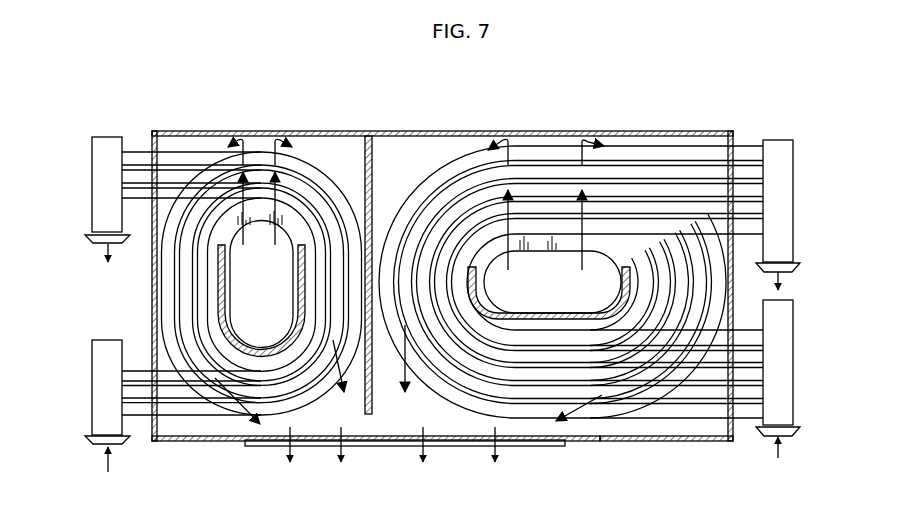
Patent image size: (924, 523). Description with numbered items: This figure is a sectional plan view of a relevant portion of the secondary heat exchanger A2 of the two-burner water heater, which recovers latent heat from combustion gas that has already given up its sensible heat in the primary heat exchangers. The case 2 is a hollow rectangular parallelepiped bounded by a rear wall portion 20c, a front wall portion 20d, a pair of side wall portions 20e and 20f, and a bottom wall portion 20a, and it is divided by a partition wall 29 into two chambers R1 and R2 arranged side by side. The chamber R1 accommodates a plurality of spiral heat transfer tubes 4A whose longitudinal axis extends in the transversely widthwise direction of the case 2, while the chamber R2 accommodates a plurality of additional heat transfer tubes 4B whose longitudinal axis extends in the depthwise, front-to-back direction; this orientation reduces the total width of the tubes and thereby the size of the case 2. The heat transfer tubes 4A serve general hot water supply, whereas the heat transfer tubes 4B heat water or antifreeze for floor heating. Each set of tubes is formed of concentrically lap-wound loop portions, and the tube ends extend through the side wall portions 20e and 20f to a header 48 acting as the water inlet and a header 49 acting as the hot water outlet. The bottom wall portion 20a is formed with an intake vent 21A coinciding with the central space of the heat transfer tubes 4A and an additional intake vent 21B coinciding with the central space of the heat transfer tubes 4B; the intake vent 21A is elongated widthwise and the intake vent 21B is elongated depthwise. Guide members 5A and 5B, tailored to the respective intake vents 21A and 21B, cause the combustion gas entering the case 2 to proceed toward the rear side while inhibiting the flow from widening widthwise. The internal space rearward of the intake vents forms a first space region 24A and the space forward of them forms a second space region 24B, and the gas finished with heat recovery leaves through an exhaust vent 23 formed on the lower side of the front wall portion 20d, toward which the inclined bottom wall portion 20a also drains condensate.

The case 2 is at (669, 131).
The heat transfer tubes 4A is at (566, 220).
The heat transfer tubes 4B is at (322, 135).
The guide member 5A is at (486, 304).
The guide member 5B is at (228, 320).
The bottom wall portion 20a is at (702, 440).
The rear wall portion 20c is at (600, 131).
The front wall portion 20d is at (608, 440).
The side wall portion 20e is at (152, 133).
The side wall portion 20f is at (733, 136).
The intake vent 21A is at (552, 282).
The intake vent 21B is at (261, 284).
The exhaust vent 23 is at (453, 446).
The first space region 24A is at (428, 150).
The second space region 24B is at (658, 440).
The partition wall 29 is at (372, 142).
The header 48 is at (92, 375).
The header 49 is at (92, 180).
The secondary heat exchanger A2 is at (719, 88).
The chamber R1 is at (465, 130).
The chamber R2 is at (258, 128).